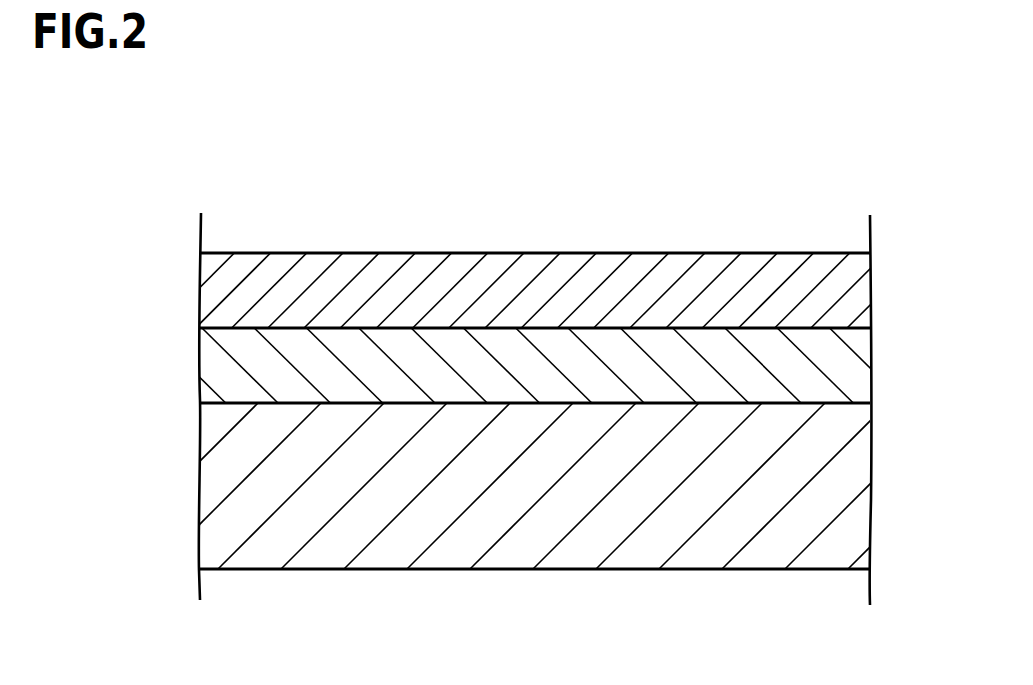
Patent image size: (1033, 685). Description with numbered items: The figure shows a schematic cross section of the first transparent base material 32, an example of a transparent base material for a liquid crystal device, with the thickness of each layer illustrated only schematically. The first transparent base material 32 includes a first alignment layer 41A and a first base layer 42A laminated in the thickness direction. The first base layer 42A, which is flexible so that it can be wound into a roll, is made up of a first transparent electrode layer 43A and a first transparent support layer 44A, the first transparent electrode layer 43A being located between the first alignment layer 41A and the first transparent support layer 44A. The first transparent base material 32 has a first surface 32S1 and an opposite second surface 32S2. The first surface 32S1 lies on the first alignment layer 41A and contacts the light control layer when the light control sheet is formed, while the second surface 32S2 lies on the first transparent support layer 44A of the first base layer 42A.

The first transparent base material 32 is at (708, 238).
The first surface 32S1 is at (355, 252).
The second surface 32S2 is at (370, 570).
The first alignment layer 41A is at (212, 291).
The first base layer 42A is at (190, 328).
The first transparent electrode layer 43A is at (853, 356).
The first transparent support layer 44A is at (858, 466).